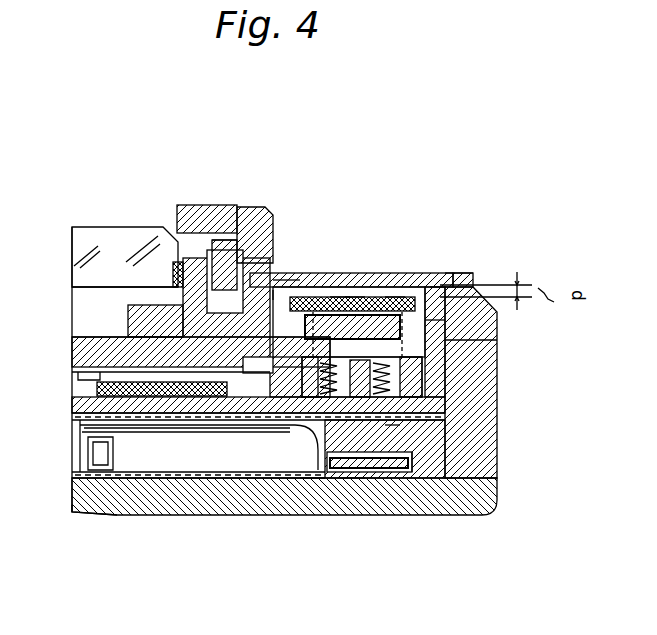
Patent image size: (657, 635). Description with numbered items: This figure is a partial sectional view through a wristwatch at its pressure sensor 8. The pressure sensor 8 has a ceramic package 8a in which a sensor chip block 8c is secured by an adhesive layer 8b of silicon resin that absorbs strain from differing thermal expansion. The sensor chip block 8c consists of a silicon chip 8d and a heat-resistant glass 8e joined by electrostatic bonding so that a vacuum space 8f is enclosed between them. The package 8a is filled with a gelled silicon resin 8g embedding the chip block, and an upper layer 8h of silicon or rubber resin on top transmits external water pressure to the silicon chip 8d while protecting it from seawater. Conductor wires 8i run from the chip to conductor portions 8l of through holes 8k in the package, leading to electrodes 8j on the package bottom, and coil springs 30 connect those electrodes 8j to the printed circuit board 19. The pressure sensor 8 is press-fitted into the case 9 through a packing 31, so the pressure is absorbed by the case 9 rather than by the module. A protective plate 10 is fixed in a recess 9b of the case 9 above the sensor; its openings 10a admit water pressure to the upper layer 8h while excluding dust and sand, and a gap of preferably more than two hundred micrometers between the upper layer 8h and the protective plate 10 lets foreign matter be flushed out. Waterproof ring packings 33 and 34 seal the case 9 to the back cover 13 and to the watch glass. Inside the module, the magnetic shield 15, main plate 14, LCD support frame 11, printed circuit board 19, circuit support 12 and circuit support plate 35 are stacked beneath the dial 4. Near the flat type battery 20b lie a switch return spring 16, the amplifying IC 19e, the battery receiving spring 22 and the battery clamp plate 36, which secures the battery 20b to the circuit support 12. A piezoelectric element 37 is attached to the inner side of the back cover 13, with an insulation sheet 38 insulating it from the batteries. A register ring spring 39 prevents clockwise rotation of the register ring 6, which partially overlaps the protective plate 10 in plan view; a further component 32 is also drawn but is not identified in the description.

The dial 4 is at (72, 345).
The register ring 6 is at (200, 218).
The pressure sensor 8 is at (274, 275).
The ceramic package 8a is at (457, 278).
The adhesive layer 8b is at (393, 440).
The sensor chip block 8c is at (333, 298).
The silicon chip 8d is at (394, 275).
The heat-resistant glass 8e is at (340, 292).
The vacuum space 8f is at (355, 300).
The gelled silicon resin 8g is at (436, 283).
The upper layer 8h is at (283, 292).
The conductor wires 8i is at (430, 320).
The electrodes 8j is at (305, 470).
The through holes 8k is at (413, 347).
The conductor portions 8l is at (438, 290).
The case 9 is at (490, 512).
The recess 9b is at (470, 280).
The protective plate 10 is at (373, 273).
The openings 10a is at (288, 283).
The LCD support frame 11 is at (316, 368).
The circuit support 12 is at (406, 470).
The back cover 13 is at (436, 472).
The main plate 14 is at (122, 345).
The magnetic shield 15 is at (103, 332).
The switch return spring 16 is at (118, 397).
The printed circuit board 19 is at (250, 425).
The amplifying IC 19e is at (185, 425).
The flat type battery 20b is at (200, 474).
The battery receiving spring 22 is at (155, 415).
The coil springs 30 is at (336, 440).
The packing 31 is at (445, 352).
The lens 32 is at (148, 235).
The waterproof ring packing 33 is at (459, 508).
The waterproof ring packing 34 is at (177, 262).
The circuit support plate 35 is at (352, 486).
The battery clamp plate 36 is at (287, 422).
The piezoelectric element 37 is at (70, 507).
The insulation sheet 38 is at (88, 470).
The register ring spring 39 is at (222, 262).